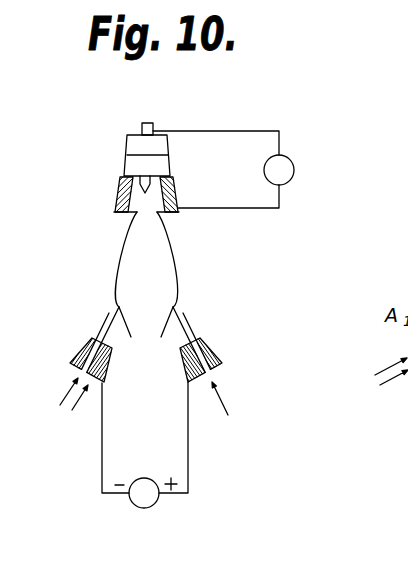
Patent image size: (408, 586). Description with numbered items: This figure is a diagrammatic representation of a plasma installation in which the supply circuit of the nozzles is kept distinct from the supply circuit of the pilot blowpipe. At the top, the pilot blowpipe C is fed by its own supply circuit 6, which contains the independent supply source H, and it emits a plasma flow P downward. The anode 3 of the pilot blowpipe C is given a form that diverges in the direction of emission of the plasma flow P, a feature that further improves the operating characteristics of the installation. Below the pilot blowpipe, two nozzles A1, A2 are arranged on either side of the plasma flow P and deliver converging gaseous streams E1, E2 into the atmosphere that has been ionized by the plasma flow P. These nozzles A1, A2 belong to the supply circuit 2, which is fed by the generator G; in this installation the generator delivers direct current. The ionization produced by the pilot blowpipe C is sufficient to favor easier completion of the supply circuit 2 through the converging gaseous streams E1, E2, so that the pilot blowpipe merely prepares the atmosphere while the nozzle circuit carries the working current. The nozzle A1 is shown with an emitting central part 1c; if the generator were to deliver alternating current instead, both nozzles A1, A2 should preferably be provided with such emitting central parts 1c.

The pilot blowpipe C is at (160, 168).
The anode 3 is at (118, 207).
The plasma flow P is at (168, 258).
The converging gaseous stream E1 is at (114, 322).
The converging gaseous stream E2 is at (181, 316).
The emitting central part 1c is at (82, 348).
The nozzle A1 is at (70, 365).
The nozzle A2 is at (223, 364).
The supply circuit 2 is at (188, 464).
The supply circuit 6 is at (279, 142).